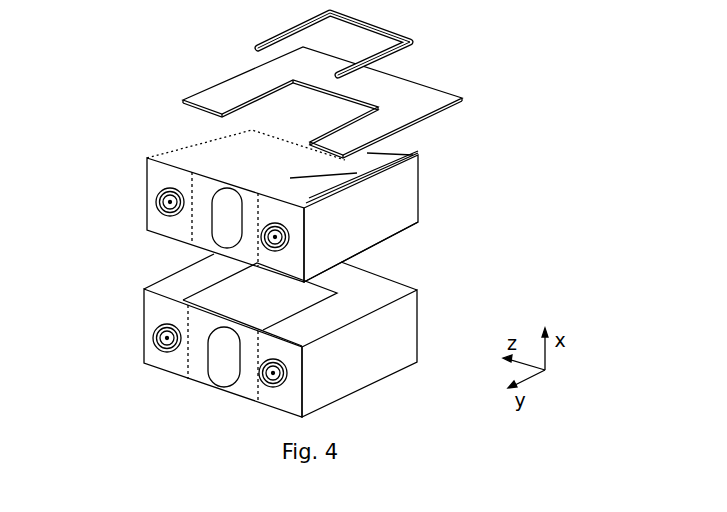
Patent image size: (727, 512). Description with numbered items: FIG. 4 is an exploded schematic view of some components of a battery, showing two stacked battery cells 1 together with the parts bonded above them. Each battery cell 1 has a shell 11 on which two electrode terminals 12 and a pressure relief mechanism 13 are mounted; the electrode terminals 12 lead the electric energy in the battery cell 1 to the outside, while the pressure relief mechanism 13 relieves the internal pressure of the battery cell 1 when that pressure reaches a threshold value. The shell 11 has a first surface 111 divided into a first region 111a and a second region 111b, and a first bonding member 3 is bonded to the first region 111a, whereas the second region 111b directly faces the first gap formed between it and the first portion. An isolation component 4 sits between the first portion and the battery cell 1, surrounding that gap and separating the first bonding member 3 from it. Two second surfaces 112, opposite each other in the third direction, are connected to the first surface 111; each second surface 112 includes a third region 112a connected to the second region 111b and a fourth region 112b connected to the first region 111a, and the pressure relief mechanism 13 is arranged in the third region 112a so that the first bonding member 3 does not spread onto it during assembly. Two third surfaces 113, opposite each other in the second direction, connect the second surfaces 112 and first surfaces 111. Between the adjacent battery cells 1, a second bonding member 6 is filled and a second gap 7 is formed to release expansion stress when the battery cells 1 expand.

The battery cell 1 is at (92, 122).
The shell 11 is at (158, 148).
The electrode terminal 12 is at (156, 180).
The pressure relief mechanism 13 is at (213, 227).
The first surface 111 is at (508, 147).
The first region 111a is at (416, 157).
The second region 111b is at (397, 184).
The second surface 112 is at (508, 208).
The third region 112a is at (417, 222).
The fourth region 112b is at (404, 223).
The third surface 113 is at (392, 296).
The first bonding member 3 is at (412, 84).
The isolation component 4 is at (383, 26).
The second bonding member 6 is at (182, 282).
The second gap 7 is at (270, 302).